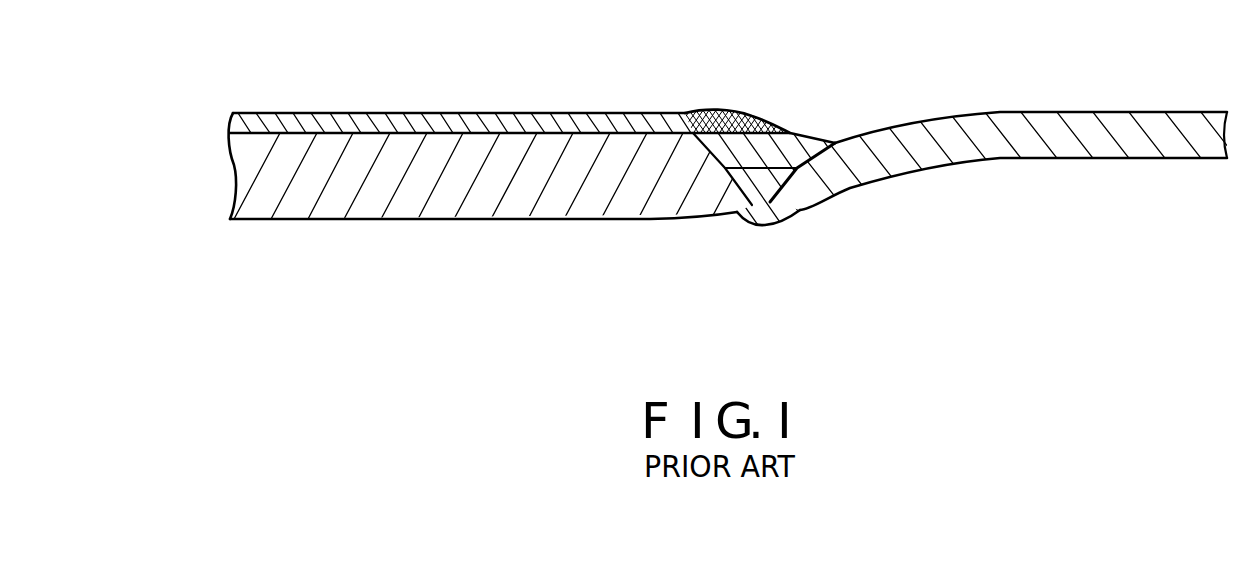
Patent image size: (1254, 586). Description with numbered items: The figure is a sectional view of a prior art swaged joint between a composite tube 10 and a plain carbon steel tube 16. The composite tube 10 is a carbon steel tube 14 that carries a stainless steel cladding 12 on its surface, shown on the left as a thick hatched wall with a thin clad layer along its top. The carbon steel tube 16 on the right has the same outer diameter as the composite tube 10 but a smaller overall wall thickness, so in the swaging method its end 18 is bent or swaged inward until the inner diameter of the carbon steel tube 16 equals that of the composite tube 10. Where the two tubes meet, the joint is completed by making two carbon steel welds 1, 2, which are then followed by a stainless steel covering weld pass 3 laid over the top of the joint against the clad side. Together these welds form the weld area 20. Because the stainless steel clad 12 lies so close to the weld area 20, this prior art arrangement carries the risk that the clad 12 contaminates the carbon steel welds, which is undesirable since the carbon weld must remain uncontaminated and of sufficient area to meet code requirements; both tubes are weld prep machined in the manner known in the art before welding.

The carbon steel weld 1 is at (738, 222).
The carbon steel weld 2 is at (831, 118).
The stainless steel covering weld pass 3 is at (720, 97).
The composite tube 10 is at (423, 230).
The stainless steel cladding 12 is at (345, 113).
The carbon steel tube 14 is at (232, 179).
The carbon steel tube 16 is at (1046, 170).
The end 18 is at (820, 207).
The weld area 20 is at (791, 95).